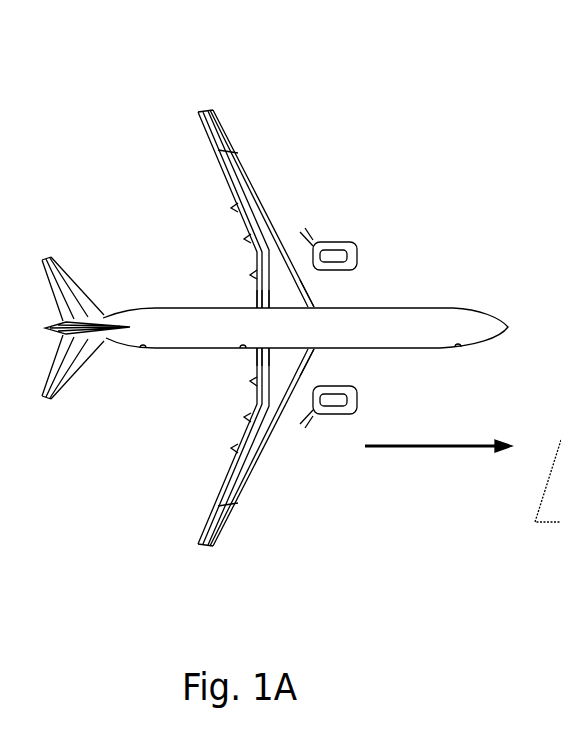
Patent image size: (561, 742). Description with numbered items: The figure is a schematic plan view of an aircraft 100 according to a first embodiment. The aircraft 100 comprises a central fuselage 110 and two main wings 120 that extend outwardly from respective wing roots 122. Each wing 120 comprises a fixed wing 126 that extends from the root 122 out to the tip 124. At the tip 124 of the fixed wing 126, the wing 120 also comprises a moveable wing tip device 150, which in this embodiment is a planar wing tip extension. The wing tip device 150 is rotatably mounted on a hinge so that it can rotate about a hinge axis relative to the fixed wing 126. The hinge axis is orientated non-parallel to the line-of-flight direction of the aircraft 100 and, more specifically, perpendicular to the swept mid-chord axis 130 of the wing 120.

The aircraft 100 is at (275, 327).
The central fuselage 110 is at (212, 315).
The main wing 120 is at (285, 327).
The wing root 122 is at (312, 347).
The tip 124 is at (249, 518).
The fixed wing 126 is at (292, 412).
The swept mid-chord axis 130 is at (281, 248).
The wing tip device 150 is at (213, 532).